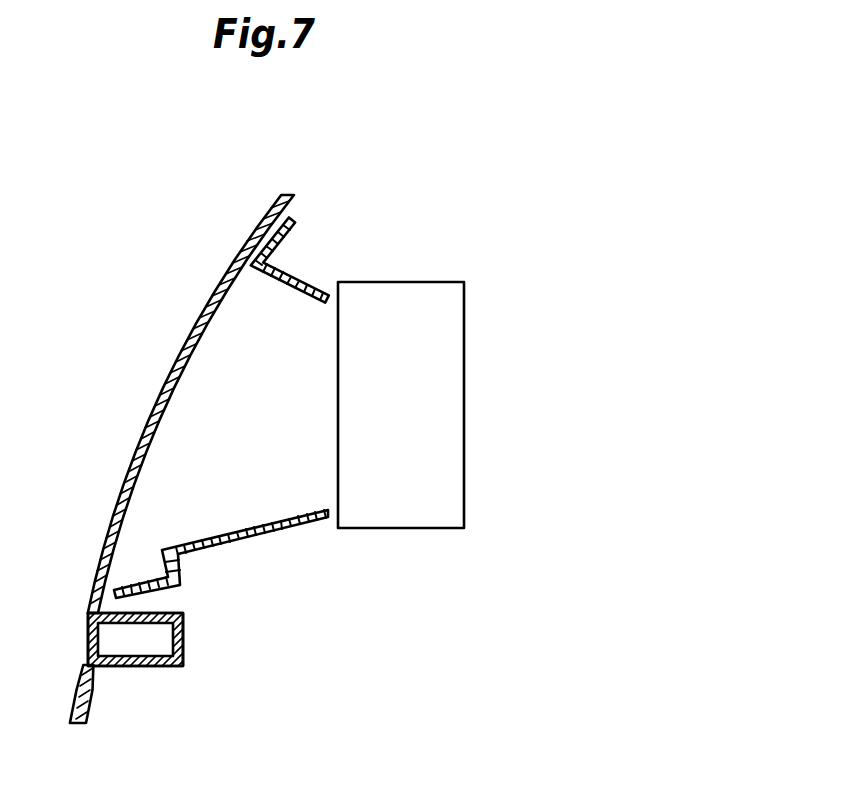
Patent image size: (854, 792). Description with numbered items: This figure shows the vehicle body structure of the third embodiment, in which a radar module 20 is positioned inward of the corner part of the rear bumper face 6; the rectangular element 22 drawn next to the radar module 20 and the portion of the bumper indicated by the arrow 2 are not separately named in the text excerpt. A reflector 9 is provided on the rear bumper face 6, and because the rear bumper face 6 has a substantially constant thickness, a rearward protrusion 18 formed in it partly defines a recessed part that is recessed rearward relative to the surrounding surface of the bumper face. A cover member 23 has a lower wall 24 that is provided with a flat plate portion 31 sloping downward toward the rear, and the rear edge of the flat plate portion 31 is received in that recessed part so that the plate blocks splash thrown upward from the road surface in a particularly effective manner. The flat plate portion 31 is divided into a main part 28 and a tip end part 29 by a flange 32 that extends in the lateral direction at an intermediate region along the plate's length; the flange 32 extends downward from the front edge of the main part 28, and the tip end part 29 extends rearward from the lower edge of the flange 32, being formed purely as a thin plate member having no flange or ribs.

The vehicle body / outer panel end 2 is at (235, 220).
The rear bumper face 6 is at (170, 380).
The reflector 9 is at (88, 640).
The rearward protrusion 18 is at (183, 640).
The radar module 20 is at (363, 245).
The housing block 22 is at (418, 292).
The cover member 23 is at (292, 268).
The lower wall 24 is at (183, 543).
The main part 28 is at (192, 536).
The tip end part 29 is at (138, 582).
The flat plate portion 31 is at (237, 533).
The flange 32 is at (177, 565).